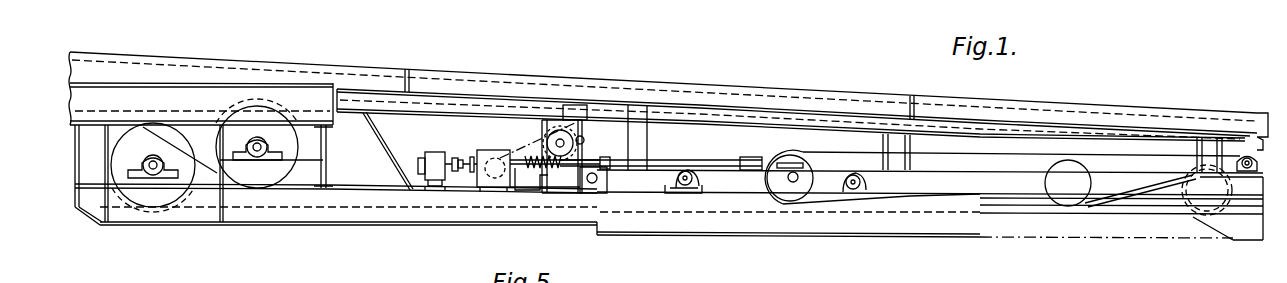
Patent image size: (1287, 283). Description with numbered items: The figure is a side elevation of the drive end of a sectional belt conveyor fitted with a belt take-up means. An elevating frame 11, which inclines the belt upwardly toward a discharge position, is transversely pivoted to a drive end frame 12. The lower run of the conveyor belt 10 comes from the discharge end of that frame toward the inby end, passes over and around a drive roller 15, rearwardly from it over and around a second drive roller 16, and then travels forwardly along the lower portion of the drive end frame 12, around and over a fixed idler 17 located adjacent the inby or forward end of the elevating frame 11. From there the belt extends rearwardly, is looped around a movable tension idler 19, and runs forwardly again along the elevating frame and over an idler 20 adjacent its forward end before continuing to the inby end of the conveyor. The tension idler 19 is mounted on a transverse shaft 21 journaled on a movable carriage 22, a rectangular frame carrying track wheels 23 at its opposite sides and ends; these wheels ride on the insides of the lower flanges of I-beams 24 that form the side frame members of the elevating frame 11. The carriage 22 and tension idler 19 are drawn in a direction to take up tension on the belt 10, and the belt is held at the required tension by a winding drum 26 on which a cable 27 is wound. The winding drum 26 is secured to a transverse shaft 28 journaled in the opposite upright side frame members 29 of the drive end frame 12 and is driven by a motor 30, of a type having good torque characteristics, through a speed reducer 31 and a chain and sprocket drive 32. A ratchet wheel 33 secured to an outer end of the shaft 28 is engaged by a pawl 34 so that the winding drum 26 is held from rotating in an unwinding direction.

The conveyor belt 10 is at (998, 154).
The elevating frame 11 is at (1175, 112).
The drive end frame 12 is at (372, 228).
The drive roller 15 is at (205, 170).
The drive roller 16 is at (183, 155).
The fixed idler 17 is at (1180, 195).
The movable tension idler 19 is at (800, 165).
The idler 20 is at (1247, 150).
The transverse shaft 21 is at (788, 180).
The carriage 22 is at (667, 193).
The track wheels 23 is at (699, 188).
The I-beams 24 is at (1008, 192).
The winding drum 26 is at (568, 125).
The cable 27 is at (667, 160).
The transverse shaft 28 is at (583, 126).
The upright side frame members 29 is at (545, 129).
The motor 30 is at (442, 153).
The speed reducer 31 is at (479, 151).
The chain and sprocket drive 32 is at (525, 172).
The ratchet wheel 33 is at (584, 140).
The pawl 34 is at (553, 123).